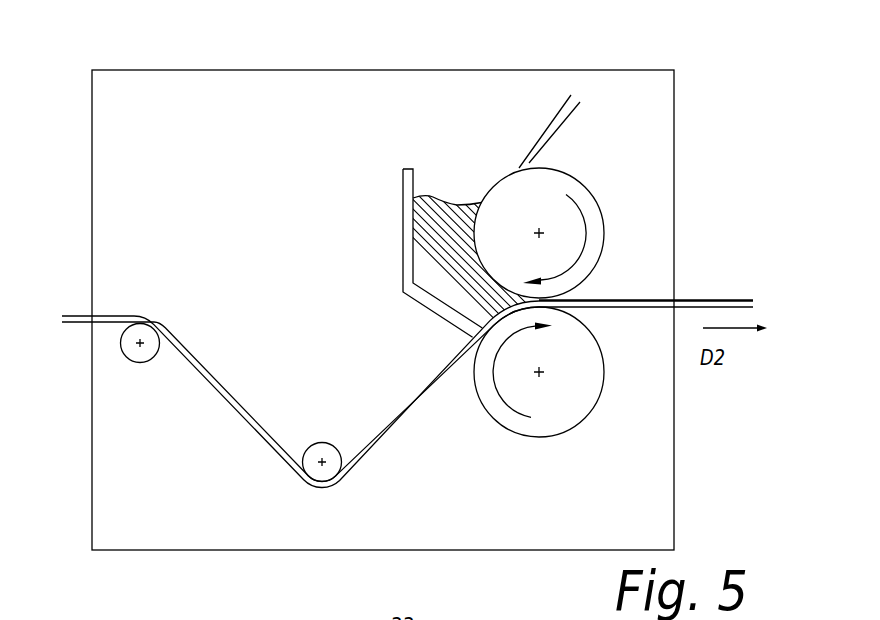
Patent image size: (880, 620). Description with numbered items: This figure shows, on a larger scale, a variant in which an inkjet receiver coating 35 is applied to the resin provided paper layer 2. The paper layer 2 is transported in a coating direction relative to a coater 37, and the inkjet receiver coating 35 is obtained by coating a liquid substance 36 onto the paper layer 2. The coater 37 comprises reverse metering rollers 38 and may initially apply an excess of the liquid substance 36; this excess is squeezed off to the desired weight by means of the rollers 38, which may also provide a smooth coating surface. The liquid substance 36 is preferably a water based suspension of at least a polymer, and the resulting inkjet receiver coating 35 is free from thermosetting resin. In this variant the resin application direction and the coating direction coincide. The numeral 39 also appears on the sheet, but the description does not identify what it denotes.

The paper layer 2 is at (408, 405).
The inkjet receiver coating 35 is at (695, 299).
The liquid substance 36 is at (435, 242).
The coater 37 is at (678, 145).
The reverse metering rollers 38 is at (574, 194).
The reference numeral (partially visible) 39 is at (131, 619).